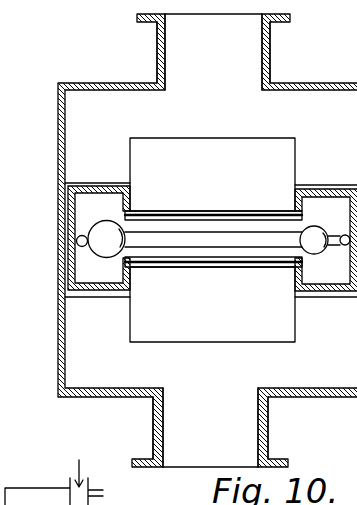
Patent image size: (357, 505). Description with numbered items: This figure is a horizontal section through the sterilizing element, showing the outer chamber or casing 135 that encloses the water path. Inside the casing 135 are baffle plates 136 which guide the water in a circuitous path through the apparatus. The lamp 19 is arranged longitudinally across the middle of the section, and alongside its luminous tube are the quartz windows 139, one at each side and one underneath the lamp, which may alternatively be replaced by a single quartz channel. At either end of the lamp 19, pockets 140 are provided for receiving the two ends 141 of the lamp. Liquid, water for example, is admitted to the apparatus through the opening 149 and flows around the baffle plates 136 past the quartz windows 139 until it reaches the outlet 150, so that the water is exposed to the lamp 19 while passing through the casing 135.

The outer chamber or casing 135 is at (58, 129).
The opening 149 is at (271, 50).
The outlet 150 is at (269, 427).
The baffle plates 136 is at (242, 141).
The quartz windows 139 is at (217, 206).
The pockets 140 is at (350, 210).
The ends of the lamp 141 is at (83, 250).
The lamp 19 is at (203, 250).